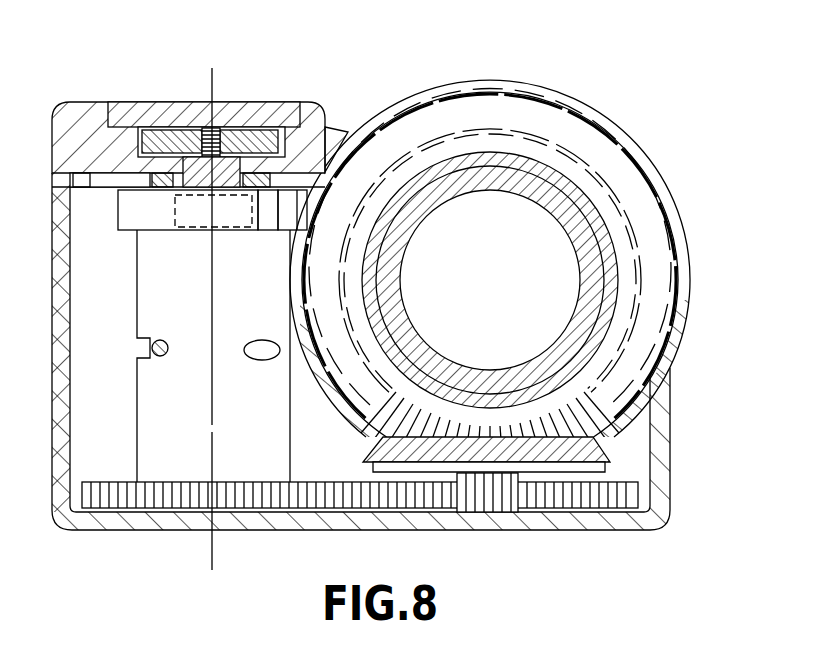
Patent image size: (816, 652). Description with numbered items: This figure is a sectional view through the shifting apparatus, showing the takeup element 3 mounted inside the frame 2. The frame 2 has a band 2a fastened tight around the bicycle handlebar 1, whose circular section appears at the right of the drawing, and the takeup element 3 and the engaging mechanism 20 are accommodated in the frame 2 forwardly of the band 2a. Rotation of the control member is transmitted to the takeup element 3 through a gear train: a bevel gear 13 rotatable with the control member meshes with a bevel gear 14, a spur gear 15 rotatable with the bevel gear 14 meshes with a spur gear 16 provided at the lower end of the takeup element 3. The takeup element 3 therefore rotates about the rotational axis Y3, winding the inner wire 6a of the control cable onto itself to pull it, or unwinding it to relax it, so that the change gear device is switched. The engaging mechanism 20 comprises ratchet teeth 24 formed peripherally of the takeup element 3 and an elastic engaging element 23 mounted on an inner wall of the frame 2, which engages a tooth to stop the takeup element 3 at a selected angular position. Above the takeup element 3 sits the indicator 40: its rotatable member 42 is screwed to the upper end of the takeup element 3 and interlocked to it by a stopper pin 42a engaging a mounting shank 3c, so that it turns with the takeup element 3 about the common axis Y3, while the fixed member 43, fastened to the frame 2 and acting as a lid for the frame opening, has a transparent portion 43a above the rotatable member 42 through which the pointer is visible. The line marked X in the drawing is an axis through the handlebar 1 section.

The bicycle handlebar 1 is at (408, 232).
The frame 2 is at (511, 270).
The band 2a is at (668, 448).
The takeup element 3 is at (150, 415).
The mounting shank 3c is at (200, 196).
The inner wire 6a is at (150, 347).
The bevel gear 13 is at (650, 340).
The bevel gear 14 is at (368, 455).
The spur gear 15 is at (542, 500).
The spur gear 16 is at (150, 500).
The engaging mechanism 20 is at (259, 275).
The engaging element 23 is at (227, 216).
The ratchet teeth 24 is at (268, 216).
The indicator 40 is at (167, 50).
The rotatable member 42 is at (326, 128).
The stopper pin 42a is at (190, 165).
The fixed member 43 is at (72, 110).
The transparent portion 43a is at (150, 110).
The optical axis X is at (487, 282).
The rotational axis Y3 is at (215, 298).